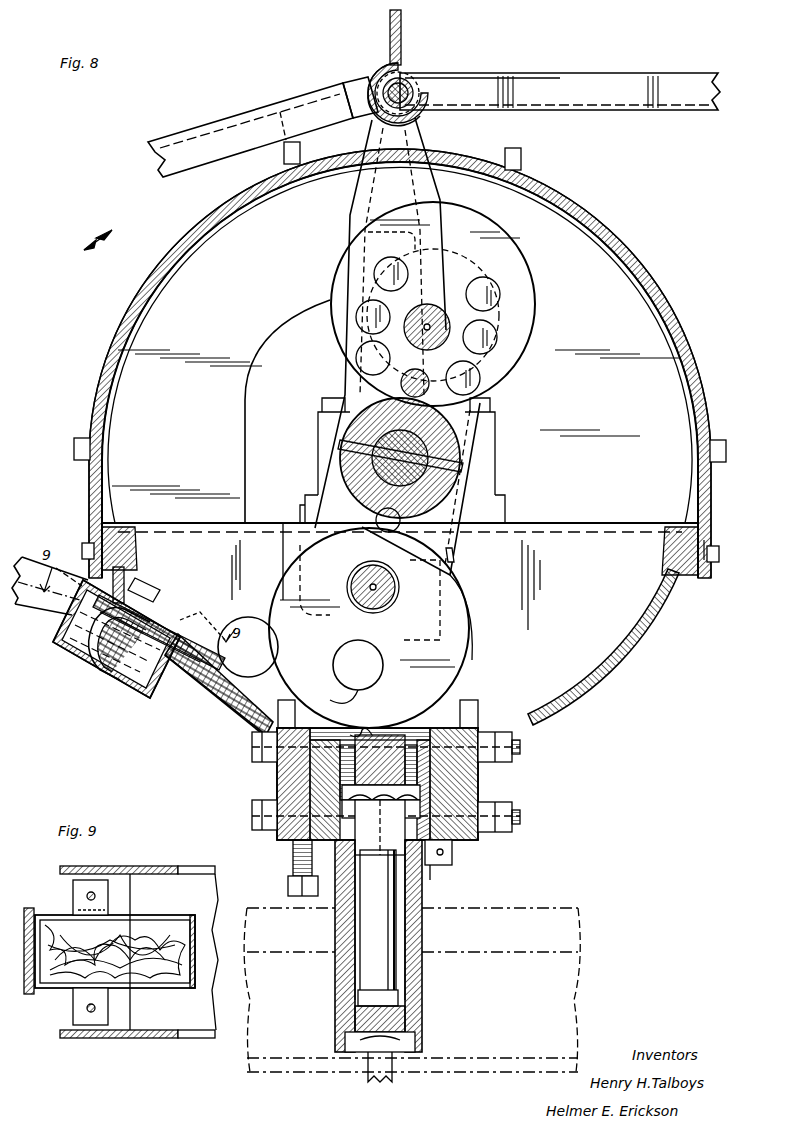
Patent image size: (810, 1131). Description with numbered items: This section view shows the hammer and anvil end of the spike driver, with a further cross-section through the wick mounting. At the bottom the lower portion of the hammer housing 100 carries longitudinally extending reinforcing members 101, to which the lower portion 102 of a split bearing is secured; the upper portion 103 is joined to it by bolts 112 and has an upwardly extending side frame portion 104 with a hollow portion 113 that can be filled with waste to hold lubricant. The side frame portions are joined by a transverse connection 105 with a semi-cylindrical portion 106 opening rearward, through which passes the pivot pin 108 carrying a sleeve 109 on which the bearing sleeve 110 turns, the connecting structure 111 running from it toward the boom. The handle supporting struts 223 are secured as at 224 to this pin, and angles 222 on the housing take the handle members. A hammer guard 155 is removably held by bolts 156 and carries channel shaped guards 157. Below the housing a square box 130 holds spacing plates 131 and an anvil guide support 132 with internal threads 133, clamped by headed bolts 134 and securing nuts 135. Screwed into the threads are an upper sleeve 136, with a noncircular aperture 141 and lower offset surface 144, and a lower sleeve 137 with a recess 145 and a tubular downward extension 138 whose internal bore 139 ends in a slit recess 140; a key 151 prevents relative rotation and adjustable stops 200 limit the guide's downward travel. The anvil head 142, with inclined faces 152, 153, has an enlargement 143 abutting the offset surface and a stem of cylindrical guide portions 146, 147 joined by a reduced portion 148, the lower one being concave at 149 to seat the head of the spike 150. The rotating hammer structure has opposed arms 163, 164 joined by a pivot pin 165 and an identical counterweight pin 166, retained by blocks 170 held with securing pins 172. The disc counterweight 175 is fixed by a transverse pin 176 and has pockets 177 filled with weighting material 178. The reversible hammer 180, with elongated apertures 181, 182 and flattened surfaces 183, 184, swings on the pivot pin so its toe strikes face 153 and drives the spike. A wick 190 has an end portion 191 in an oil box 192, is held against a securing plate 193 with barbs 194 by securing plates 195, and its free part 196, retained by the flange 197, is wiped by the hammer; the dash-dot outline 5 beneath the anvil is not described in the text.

In FIG. 8, the base/frame outline 5 is at (580, 910).
In FIG. 8, the lower portion of hammer housing 100 is at (630, 664).
In FIG. 9, the lower portion of hammer housing 100 is at (74, 866).
In FIG. 8, the reinforcing members 101 is at (305, 515).
In FIG. 8, the lower portion of split bearing 102 is at (322, 466).
In FIG. 8, the upper portion of split bearing 103 is at (322, 428).
In FIG. 8, the side frame portion 104 is at (378, 185).
In FIG. 8, the transverse connection 105 is at (389, 22).
In FIG. 8, the semi-cylindrical portion 106 is at (372, 72).
In FIG. 8, the pivot pin 108 is at (418, 96).
In FIG. 8, the sleeve 109 is at (404, 84).
In FIG. 8, the bearing sleeve 110 is at (416, 96).
In FIG. 8, the connecting structure 111 is at (612, 92).
In FIG. 8, the bolts 112 is at (322, 405).
In FIG. 8, the hollow portion 113 is at (432, 246).
In FIG. 8, the square box 130 is at (480, 792).
In FIG. 8, the spacing plates 131 is at (452, 852).
In FIG. 8, the anvil guide support 132 is at (480, 776).
In FIG. 8, the screw threads 133 is at (300, 782).
In FIG. 8, the headed bolts 134 is at (518, 748).
In FIG. 8, the securing nuts 135 is at (500, 736).
In FIG. 8, the upper screw threaded sleeve 136 is at (268, 758).
In FIG. 8, the lower screw threaded sleeve 137 is at (310, 858).
In FIG. 8, the tubular downward extension 138 is at (340, 956).
In FIG. 8, the internal bore 139 is at (354, 974).
In FIG. 8, the slit bottom extension 140 is at (352, 1048).
In FIG. 8, the noncircular aperture 141 is at (332, 745).
In FIG. 8, the anvil head 142 is at (375, 730).
In FIG. 8, the enlargement 143 is at (480, 806).
In FIG. 8, the lower offset surface 144 is at (424, 745).
In FIG. 8, the recess 145 is at (280, 822).
In FIG. 8, the cylindrical guide portion 146 is at (380, 827).
In FIG. 8, the cylindrical guide portion 147 is at (400, 1000).
In FIG. 8, the reduced portion 148 is at (392, 936).
In FIG. 8, the concave surface 149 is at (406, 1022).
In FIG. 8, the spike 150 is at (394, 1050).
In FIG. 8, the key 151 is at (441, 881).
In FIG. 8, the inclined face 152 is at (408, 738).
In FIG. 8, the inclined face 153 is at (358, 732).
In FIG. 8, the hammer guard 155 is at (130, 303).
In FIG. 8, the bolts 156 is at (90, 548).
In FIG. 8, the channel shaped guards 157 is at (128, 360).
In FIG. 8, the arm 163 is at (455, 540).
In FIG. 8, the arm 164 is at (500, 300).
In FIG. 8, the pivot pin 165 is at (364, 580).
In FIG. 8, the counterweight pin 166 is at (432, 318).
In FIG. 8, the retaining blocks 170 is at (372, 348).
In FIG. 8, the securing pins 172 is at (470, 378).
In FIG. 8, the counterweight 175 is at (336, 288).
In FIG. 8, the transversely extending pin 176 is at (400, 382).
In FIG. 8, the pockets 177 is at (482, 342).
In FIG. 8, the weighting material 178 is at (492, 318).
In FIG. 8, the hammer 180 is at (305, 575).
In FIG. 8, the elongated aperture 181 is at (364, 612).
In FIG. 8, the elongated aperture 182 is at (350, 645).
In FIG. 8, the flattened surface 183 is at (456, 578).
In FIG. 8, the flattened surface 184 is at (332, 706).
In FIG. 8, the wick 190 is at (188, 648).
In FIG. 9, the wick 190 is at (136, 920).
In FIG. 8, the end portion of wick 191 is at (112, 680).
In FIG. 8, the oil box 192 is at (70, 660).
In FIG. 9, the oil box 192 is at (44, 990).
In FIG. 8, the securing plate 193 is at (190, 660).
In FIG. 9, the securing plate 193 is at (160, 988).
In FIG. 8, the points or barbs 194 is at (218, 634).
In FIG. 8, the securing plates 195 is at (170, 610).
In FIG. 9, the securing plates 195 is at (26, 912).
In FIG. 8, the free part of wick 196 is at (248, 647).
In FIG. 8, the upwardly extending flange 197 is at (230, 690).
In FIG. 9, the upwardly extending flange 197 is at (194, 916).
In FIG. 8, the adjustable stops 200 is at (293, 870).
In FIG. 8, the angles 222 is at (50, 598).
In FIG. 8, the handle supporting struts 223 is at (193, 140).
In FIG. 8, the strut securing point 224 is at (354, 86).